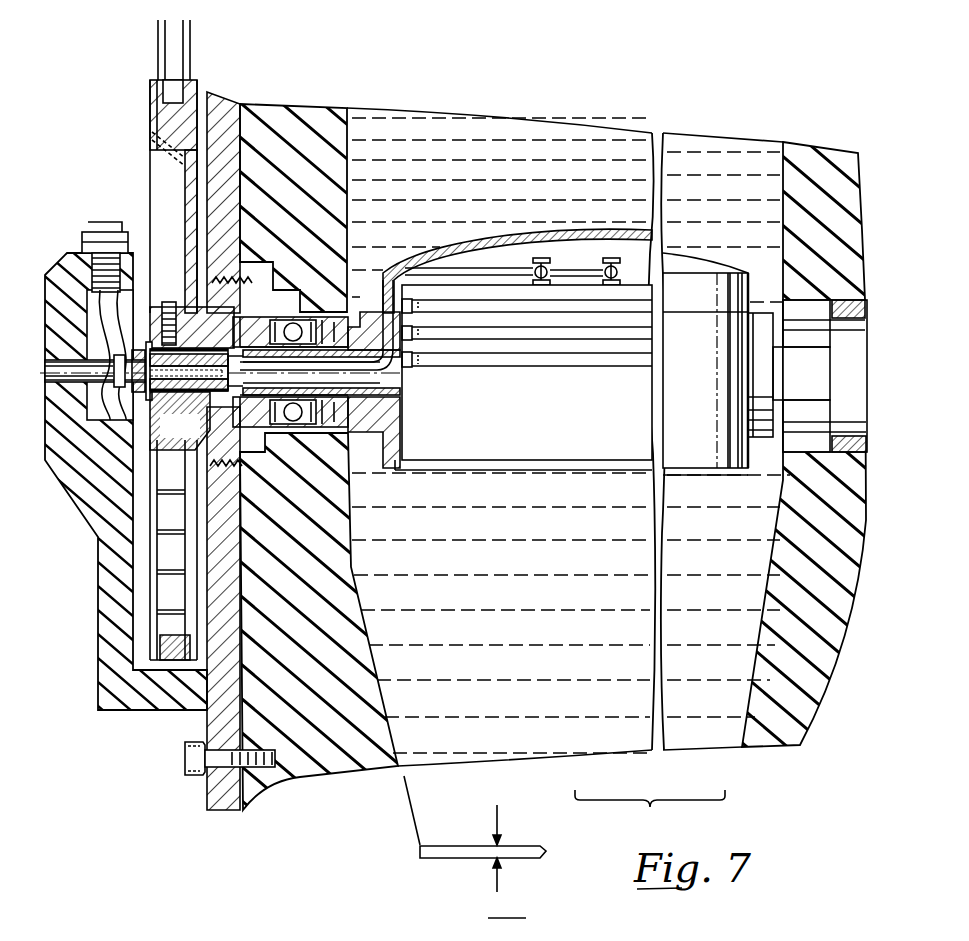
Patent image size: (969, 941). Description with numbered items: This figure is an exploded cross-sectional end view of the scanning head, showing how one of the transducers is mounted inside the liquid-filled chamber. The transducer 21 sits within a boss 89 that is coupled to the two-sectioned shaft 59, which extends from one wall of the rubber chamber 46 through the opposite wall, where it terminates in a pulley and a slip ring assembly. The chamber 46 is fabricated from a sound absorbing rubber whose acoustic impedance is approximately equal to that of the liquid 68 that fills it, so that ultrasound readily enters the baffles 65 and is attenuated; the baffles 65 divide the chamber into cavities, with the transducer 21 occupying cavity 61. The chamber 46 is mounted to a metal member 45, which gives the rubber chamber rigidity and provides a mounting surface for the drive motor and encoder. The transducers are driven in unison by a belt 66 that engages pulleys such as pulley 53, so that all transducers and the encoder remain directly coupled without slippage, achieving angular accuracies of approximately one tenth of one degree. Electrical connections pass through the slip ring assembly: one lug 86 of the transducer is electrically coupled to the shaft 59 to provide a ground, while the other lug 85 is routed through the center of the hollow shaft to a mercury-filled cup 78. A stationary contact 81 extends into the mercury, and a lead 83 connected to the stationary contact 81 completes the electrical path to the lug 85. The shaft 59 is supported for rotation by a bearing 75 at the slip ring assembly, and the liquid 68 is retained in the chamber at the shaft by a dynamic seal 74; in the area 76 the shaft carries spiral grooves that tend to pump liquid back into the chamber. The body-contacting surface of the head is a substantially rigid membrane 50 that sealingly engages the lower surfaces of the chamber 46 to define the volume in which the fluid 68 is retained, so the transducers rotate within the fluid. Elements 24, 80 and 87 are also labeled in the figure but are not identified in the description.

The transducer 21 is at (571, 364).
The shaft 24 is at (814, 934).
The metal member 45 is at (228, 100).
The rubber chamber 46 is at (310, 105).
The membrane 50 is at (420, 851).
The pulley 53 is at (158, 601).
The two-sectioned shaft 59 is at (805, 353).
The cavity 61 is at (470, 131).
The baffles 65 is at (270, 933).
The belt 66 is at (170, 60).
The liquid 68 is at (571, 619).
The dynamic seal 74 is at (316, 328).
The bearing 75 is at (291, 320).
The area 76 is at (335, 347).
The mercury-filled cup 78 is at (229, 427).
The hub 80 is at (190, 400).
The stationary contact 81 is at (139, 353).
The lead 83 is at (110, 293).
The lug 85 is at (540, 258).
The lug 86 is at (612, 258).
The cover 87 is at (482, 249).
The boss 89 is at (387, 413).